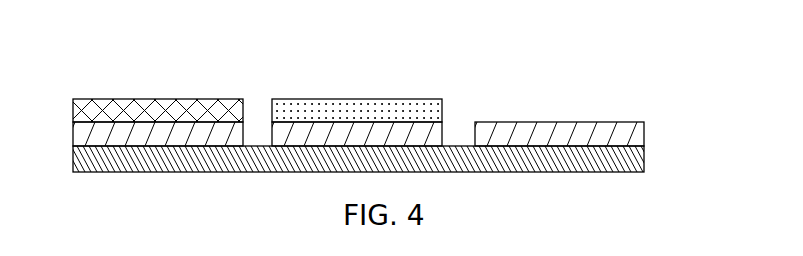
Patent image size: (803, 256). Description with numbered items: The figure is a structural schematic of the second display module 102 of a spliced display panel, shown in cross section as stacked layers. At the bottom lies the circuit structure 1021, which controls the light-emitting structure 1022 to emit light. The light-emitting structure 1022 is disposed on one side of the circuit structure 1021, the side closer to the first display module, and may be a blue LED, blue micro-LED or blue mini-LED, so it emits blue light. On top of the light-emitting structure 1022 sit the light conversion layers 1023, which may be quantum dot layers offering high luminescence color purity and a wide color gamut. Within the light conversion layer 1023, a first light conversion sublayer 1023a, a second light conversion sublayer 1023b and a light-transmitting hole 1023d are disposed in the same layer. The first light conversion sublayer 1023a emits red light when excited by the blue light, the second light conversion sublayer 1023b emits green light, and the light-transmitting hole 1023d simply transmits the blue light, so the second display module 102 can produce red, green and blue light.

The second display module 102 is at (92, 33).
The circuit structure 1021 is at (648, 164).
The light-emitting structure 1022 is at (648, 134).
The light conversion layer 1023 is at (353, 46).
The first light conversion sublayer 1023a is at (153, 98).
The second light conversion sublayer 1023b is at (350, 98).
The light-transmitting hole 1023d is at (559, 106).